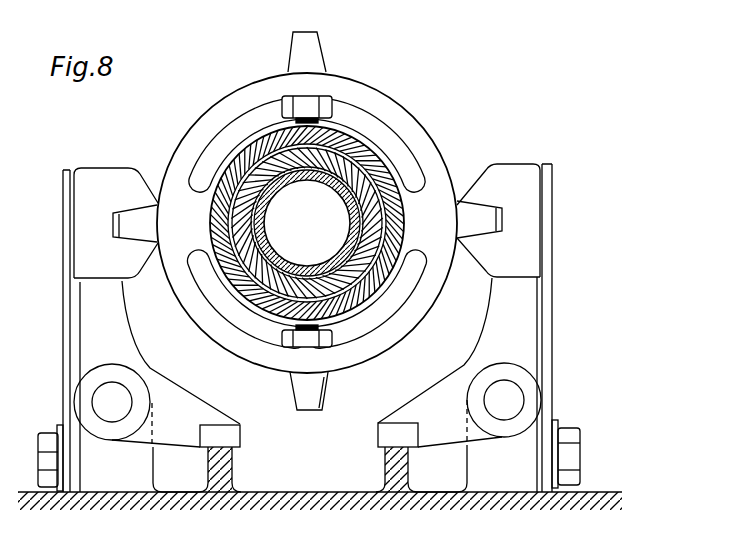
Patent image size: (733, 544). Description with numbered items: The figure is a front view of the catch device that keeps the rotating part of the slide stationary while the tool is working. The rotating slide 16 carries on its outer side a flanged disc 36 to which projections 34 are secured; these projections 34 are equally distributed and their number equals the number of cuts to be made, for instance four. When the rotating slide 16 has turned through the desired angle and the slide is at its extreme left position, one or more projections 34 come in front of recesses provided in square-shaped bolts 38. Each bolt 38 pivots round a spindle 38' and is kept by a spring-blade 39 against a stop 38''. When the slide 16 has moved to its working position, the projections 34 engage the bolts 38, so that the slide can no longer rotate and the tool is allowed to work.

The projections 34 is at (316, 56).
The flanged disc 36 is at (400, 117).
The rotating slide 16 is at (388, 177).
The square-shaped bolts 38 is at (311, 221).
The spring-blade 39 is at (67, 273).
The spindle 38' is at (275, 405).
The stop 38'' is at (310, 457).